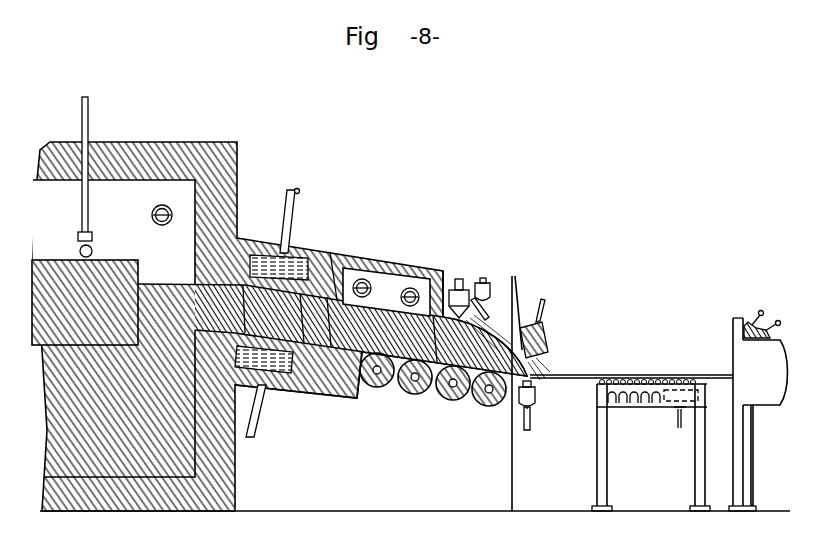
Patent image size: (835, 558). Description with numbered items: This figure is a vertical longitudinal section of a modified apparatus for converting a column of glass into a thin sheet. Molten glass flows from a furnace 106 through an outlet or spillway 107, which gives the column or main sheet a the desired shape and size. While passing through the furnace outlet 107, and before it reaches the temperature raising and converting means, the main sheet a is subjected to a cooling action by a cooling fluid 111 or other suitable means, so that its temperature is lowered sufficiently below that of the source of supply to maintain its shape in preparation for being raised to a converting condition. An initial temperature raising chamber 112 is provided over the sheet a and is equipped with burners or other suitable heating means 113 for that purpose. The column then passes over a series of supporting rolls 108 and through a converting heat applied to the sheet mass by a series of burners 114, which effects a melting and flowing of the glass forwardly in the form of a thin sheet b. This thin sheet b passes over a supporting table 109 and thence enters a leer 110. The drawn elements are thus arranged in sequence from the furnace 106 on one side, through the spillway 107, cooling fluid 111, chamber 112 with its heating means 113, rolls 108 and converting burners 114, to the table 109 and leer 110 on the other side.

The furnace 106 is at (187, 200).
The outlet or spillway 107 is at (338, 257).
The supporting rolls 108 is at (408, 388).
The supporting table 109 is at (646, 402).
The leer 110 is at (758, 411).
The cooling fluid 111 is at (290, 272).
The initial temperature raising chamber 112 is at (390, 285).
The burners or heating means 113 is at (432, 285).
The burners 114 is at (490, 284).
The column or main sheet a is at (357, 338).
The thin sheet b is at (618, 377).